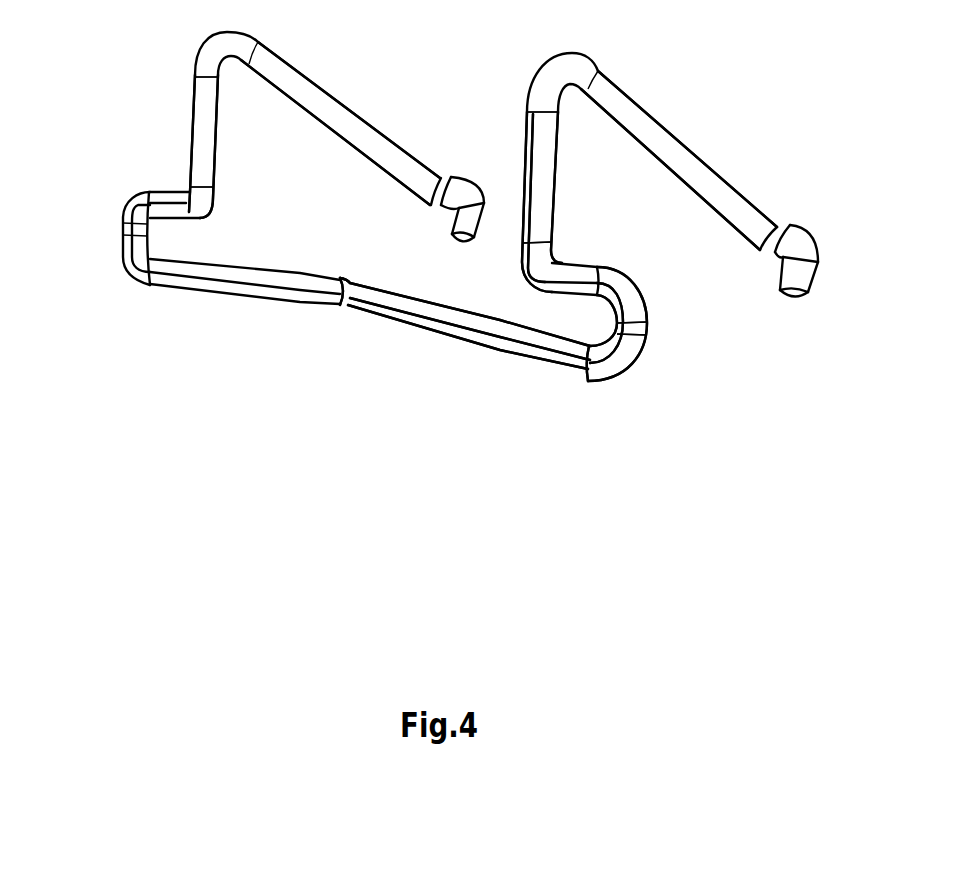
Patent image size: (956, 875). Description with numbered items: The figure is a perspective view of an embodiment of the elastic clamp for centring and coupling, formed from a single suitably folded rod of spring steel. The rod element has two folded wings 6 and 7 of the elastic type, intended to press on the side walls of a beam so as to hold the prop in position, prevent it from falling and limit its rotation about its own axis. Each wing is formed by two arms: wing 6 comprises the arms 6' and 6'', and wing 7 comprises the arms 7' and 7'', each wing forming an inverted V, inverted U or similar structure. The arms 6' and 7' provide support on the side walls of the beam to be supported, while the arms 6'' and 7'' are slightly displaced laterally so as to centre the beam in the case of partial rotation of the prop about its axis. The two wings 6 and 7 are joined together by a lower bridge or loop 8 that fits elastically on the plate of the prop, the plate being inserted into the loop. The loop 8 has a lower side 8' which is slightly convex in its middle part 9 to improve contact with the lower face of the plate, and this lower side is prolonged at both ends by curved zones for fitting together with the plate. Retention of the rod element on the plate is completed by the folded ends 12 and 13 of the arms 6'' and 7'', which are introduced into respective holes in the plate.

The wing 6 is at (241, 125).
The arm 6' is at (228, 151).
The arm 6'' is at (340, 123).
The wing 7 is at (649, 200).
The arm 7' is at (567, 202).
The arm 7'' is at (679, 173).
The loop 8 is at (385, 310).
The lower side 8' is at (493, 337).
The middle part 9 is at (342, 285).
The folded end 12 is at (481, 231).
The folded end 13 is at (812, 270).